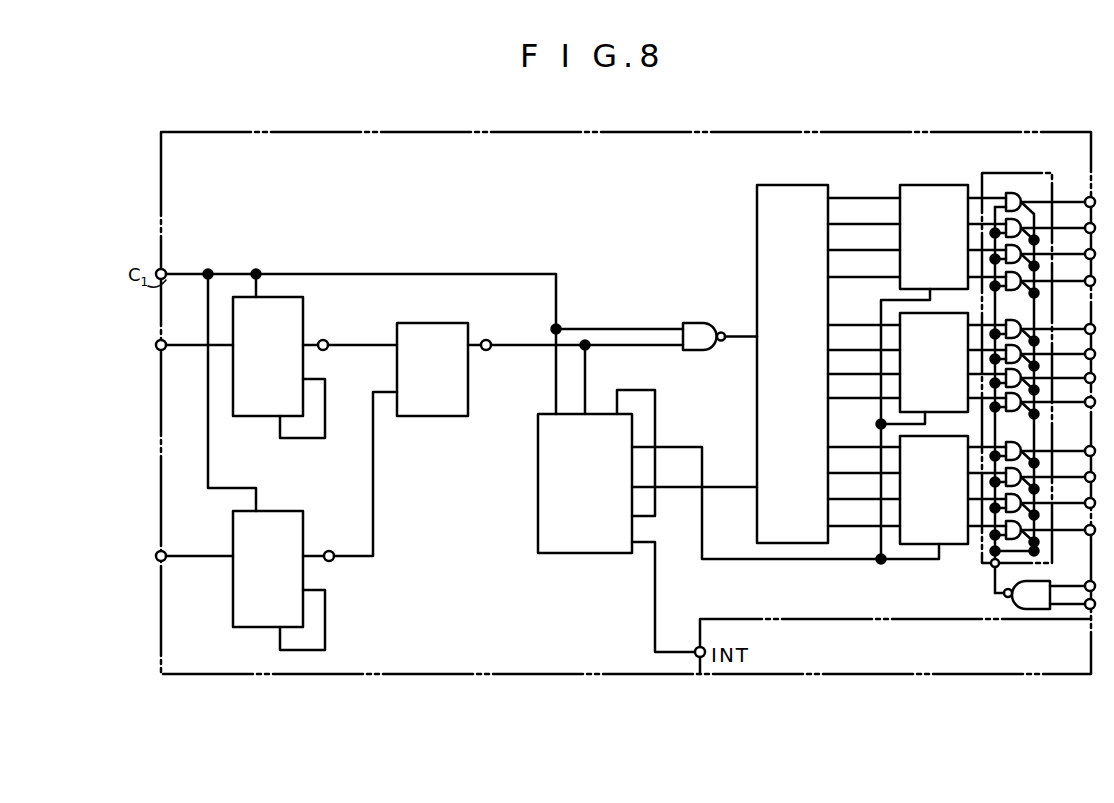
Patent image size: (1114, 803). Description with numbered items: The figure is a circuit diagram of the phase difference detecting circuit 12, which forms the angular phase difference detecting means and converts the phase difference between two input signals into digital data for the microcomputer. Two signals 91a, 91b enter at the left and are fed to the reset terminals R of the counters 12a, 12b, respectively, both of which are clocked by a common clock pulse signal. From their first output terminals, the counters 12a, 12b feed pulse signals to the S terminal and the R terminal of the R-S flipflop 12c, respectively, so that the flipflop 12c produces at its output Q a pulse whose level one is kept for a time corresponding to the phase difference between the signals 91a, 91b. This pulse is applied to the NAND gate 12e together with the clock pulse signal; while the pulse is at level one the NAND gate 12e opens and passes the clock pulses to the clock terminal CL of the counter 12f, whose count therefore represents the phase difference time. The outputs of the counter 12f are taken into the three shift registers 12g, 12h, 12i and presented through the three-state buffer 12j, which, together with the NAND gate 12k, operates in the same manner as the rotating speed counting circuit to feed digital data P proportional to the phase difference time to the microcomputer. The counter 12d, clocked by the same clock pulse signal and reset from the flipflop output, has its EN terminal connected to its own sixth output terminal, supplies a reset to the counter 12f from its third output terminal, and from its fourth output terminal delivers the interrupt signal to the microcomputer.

The phase difference detecting circuit 12 is at (640, 132).
The counter 12a is at (250, 416).
The counter 12b is at (252, 627).
The R-S flipflop 12c is at (436, 416).
The counter 12d is at (578, 553).
The NAND gate 12e is at (700, 328).
The counter 12f is at (781, 185).
The shift register 12g is at (927, 185).
The shift register 12h is at (900, 318).
The shift register 12i is at (900, 441).
The three-state buffer 12j is at (1007, 173).
The NAND gate 12k is at (1034, 608).
The signal 91a is at (187, 349).
The signal 91b is at (187, 560).